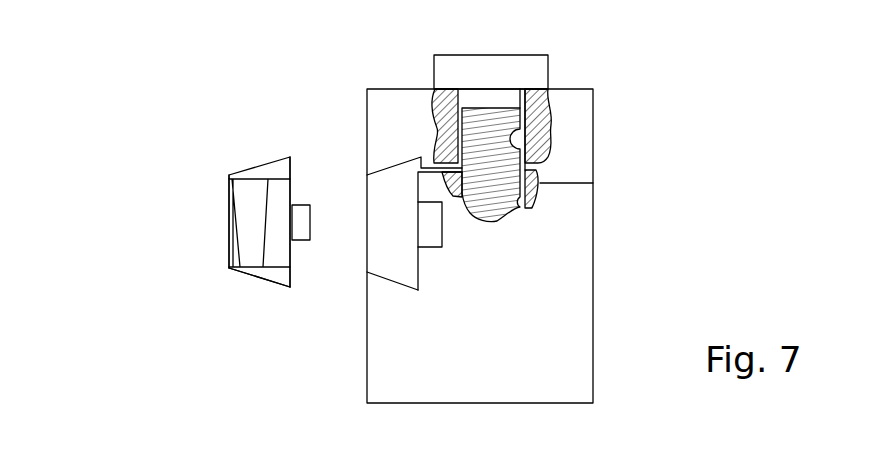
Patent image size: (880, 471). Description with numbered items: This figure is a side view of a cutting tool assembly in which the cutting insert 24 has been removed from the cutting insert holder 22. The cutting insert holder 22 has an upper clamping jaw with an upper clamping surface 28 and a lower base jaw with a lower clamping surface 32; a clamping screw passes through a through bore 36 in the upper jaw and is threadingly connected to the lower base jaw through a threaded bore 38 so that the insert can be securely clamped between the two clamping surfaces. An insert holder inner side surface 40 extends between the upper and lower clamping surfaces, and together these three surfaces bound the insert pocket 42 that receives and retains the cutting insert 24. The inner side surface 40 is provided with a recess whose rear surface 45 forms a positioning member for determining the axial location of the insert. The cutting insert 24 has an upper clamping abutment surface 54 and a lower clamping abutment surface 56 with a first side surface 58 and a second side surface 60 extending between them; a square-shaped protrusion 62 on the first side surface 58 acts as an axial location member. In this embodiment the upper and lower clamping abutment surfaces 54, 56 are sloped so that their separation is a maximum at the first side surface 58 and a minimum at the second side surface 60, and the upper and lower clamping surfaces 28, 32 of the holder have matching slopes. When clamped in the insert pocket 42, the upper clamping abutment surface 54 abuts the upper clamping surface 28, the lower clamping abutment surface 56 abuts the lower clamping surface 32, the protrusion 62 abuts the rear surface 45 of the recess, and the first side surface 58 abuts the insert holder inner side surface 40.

The cutting insert holder 22 is at (660, 37).
The cutting insert 24 is at (138, 126).
The upper clamping surface 28 is at (384, 172).
The lower clamping surface 32 is at (380, 273).
The through bore 36 is at (521, 123).
The threaded bore 38 is at (516, 209).
The insert holder inner side surface 40 is at (418, 185).
The insert pocket 42 is at (398, 262).
The rear surface 45 is at (430, 235).
The upper clamping abutment surface 54 is at (262, 166).
The lower clamping abutment surface 56 is at (250, 276).
The first side surface 58 is at (297, 190).
The second side surface 60 is at (228, 230).
The protrusion 62 is at (300, 232).